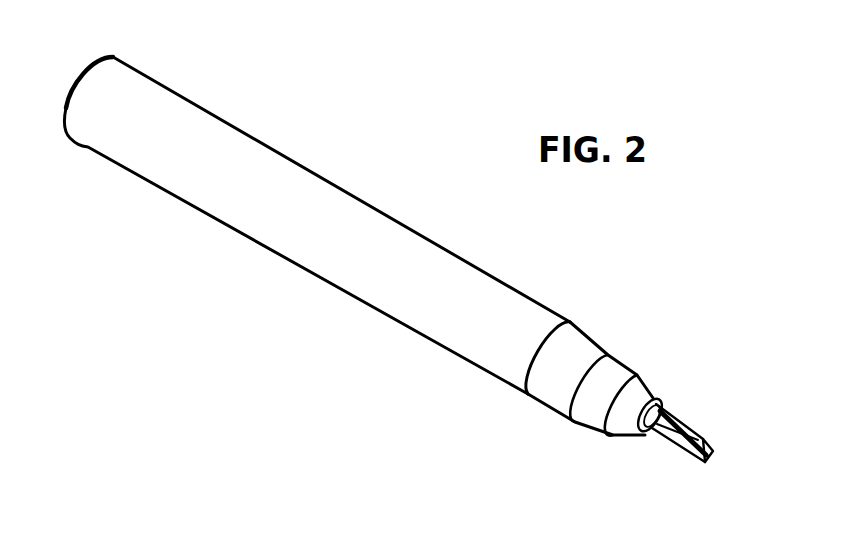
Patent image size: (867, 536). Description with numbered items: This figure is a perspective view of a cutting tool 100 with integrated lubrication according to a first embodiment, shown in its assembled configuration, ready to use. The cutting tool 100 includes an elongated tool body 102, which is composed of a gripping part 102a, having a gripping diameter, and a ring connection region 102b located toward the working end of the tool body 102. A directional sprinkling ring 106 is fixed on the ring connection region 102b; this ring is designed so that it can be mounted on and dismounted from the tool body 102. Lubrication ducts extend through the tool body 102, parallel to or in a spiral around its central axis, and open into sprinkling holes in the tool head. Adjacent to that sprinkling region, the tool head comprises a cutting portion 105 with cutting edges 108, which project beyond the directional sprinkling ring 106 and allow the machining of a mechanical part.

The cutting tool 100 is at (376, 84).
The tool body 102 is at (553, 463).
The gripping part 102a is at (602, 318).
The ring connection region 102b is at (605, 313).
The cutting portion 105 is at (697, 437).
The directional sprinkling ring 106 is at (593, 422).
The cutting edges 108 is at (700, 455).